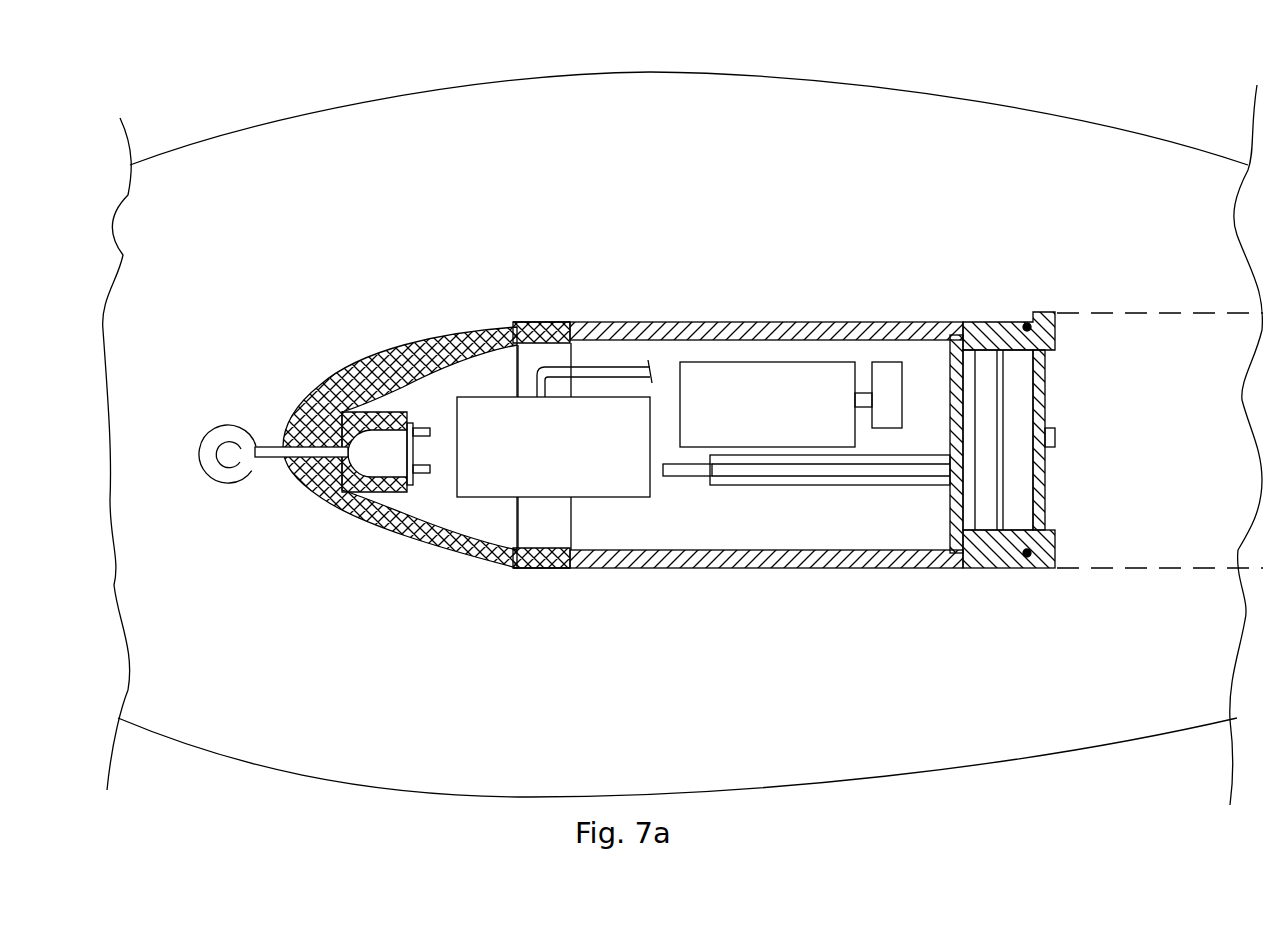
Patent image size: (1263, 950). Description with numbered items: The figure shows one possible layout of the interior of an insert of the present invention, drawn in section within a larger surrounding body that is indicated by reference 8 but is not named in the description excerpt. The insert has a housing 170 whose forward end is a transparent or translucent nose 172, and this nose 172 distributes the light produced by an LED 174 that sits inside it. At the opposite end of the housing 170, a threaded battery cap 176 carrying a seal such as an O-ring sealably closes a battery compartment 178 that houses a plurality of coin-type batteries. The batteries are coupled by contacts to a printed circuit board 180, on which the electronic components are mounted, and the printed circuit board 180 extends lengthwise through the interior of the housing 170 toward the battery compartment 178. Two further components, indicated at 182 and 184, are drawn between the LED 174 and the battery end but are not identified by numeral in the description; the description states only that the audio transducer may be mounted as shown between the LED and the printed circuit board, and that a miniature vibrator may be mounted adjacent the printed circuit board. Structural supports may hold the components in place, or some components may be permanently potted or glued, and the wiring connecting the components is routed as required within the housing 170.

The pipe / tubular body 8 is at (277, 88).
The housing 170 is at (644, 323).
The nose 172 is at (348, 372).
The LED 174 is at (390, 463).
The threaded battery cap 176 is at (1047, 373).
The battery compartment 178 is at (982, 373).
The printed circuit board 180 is at (843, 487).
The motor 182 is at (748, 383).
The electronics block 184 is at (617, 497).